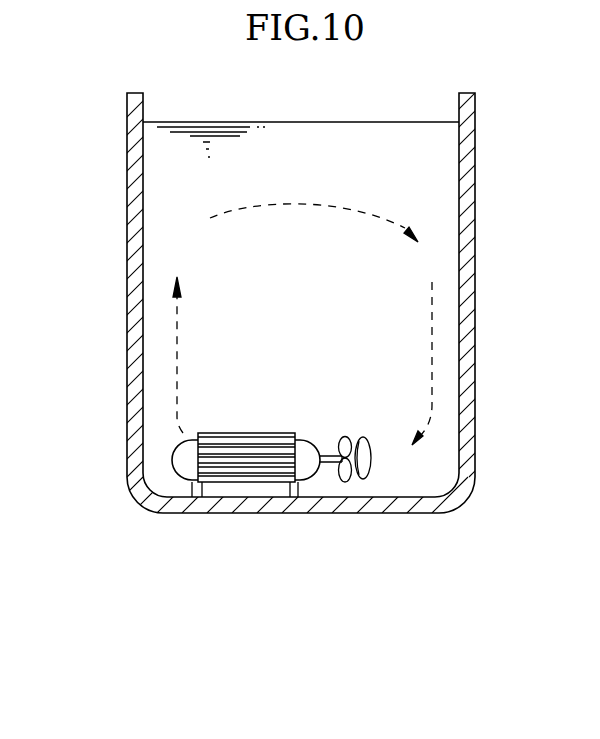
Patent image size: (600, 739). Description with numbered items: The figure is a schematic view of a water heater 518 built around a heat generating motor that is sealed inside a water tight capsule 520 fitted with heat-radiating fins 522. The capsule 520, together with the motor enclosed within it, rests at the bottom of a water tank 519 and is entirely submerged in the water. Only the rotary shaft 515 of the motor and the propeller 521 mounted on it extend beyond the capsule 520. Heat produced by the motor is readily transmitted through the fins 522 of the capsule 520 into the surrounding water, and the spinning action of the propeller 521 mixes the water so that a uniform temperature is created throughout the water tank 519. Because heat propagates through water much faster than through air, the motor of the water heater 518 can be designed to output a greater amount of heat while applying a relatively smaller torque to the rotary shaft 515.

The water tank 519 is at (134, 218).
The water heater 518 is at (294, 432).
The heat-radiating fins 522 is at (295, 433).
The water tight capsule 520 is at (238, 452).
The propeller 521 is at (349, 440).
The rotary shaft 515 is at (330, 463).